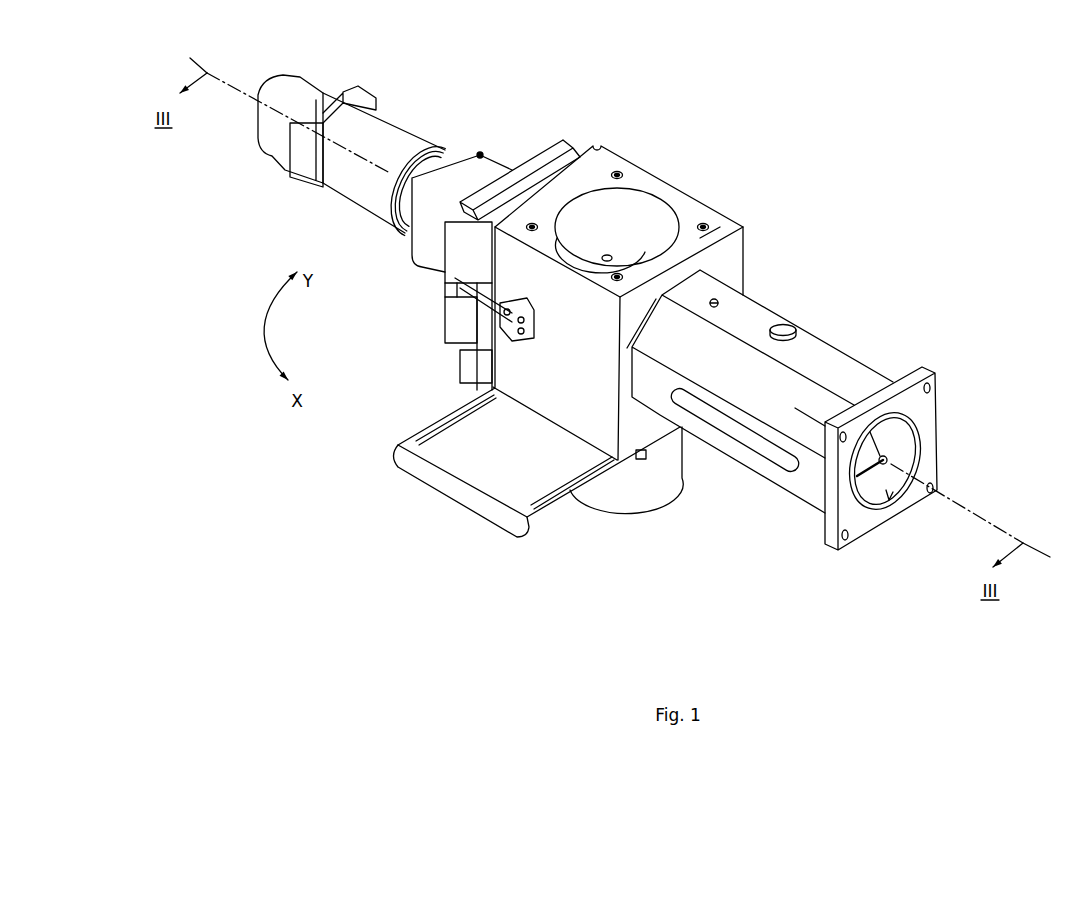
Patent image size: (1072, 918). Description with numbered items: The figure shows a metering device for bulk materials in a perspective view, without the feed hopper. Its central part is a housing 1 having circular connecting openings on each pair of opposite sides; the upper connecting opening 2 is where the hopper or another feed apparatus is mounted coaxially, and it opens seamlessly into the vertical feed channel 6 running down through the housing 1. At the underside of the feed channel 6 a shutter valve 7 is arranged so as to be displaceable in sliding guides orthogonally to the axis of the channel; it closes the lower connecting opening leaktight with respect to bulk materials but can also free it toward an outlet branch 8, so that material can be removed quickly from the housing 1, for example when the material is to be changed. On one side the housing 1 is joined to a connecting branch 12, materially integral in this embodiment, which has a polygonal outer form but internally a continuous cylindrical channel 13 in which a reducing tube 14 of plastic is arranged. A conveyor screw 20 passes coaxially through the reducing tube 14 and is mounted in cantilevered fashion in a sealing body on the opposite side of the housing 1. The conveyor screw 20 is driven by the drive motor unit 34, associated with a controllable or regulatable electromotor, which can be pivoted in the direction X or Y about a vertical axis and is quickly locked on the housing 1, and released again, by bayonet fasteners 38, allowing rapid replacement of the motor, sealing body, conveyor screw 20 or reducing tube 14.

The housing 1 is at (698, 212).
The connecting opening 2 is at (663, 198).
The vertical feed channel 6 is at (592, 242).
The shutter valve 7 is at (497, 470).
The outlet branch 8 is at (653, 477).
The connecting branch 12 is at (847, 372).
The cylindrical channel 13 is at (885, 488).
The reducing tube 14 is at (917, 438).
The conveyor screw 20 is at (823, 543).
The drive motor unit 34 is at (383, 137).
The bayonet fasteners 38 is at (497, 303).